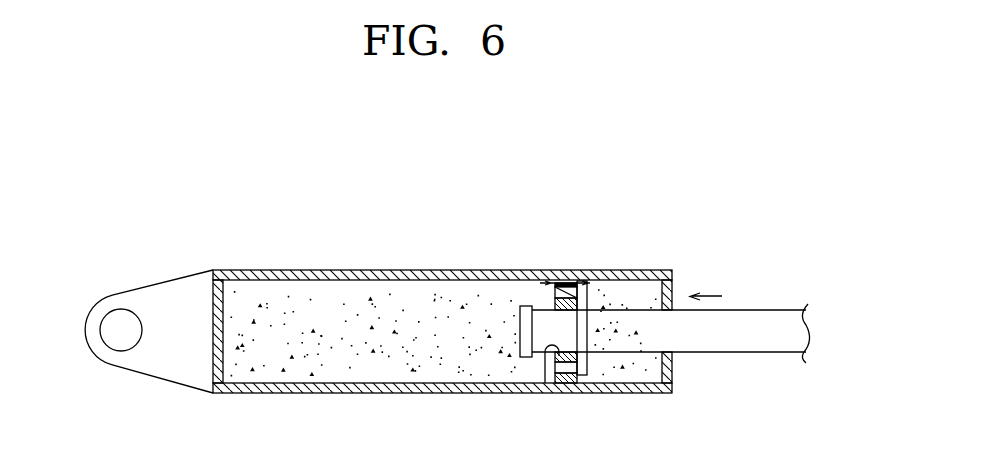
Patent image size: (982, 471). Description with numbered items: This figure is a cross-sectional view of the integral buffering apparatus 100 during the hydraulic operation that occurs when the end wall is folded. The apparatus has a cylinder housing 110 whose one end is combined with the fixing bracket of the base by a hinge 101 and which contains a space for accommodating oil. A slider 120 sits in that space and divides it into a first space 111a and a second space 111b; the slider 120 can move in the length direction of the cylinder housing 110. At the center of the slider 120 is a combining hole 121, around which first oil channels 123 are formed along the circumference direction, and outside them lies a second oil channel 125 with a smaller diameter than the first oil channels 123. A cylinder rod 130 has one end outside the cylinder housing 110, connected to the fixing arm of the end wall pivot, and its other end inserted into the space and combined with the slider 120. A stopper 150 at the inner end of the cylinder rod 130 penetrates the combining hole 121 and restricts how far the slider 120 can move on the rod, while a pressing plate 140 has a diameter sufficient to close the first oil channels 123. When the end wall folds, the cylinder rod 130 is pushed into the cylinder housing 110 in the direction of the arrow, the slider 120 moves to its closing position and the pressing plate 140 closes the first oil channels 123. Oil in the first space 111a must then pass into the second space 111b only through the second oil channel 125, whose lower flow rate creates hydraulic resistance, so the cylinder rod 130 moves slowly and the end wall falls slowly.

The integral buffering apparatus 100 is at (252, 172).
The hinge 101 is at (122, 318).
The cylinder housing 110 is at (385, 275).
The first space 111a is at (273, 277).
The second space 111b is at (625, 293).
The slider 120 is at (562, 380).
The combining hole 121 is at (542, 367).
The first oil channels 123 is at (555, 292).
The second oil channel 125 is at (567, 285).
The cylinder rod 130 is at (757, 318).
The pressing plate 140 is at (585, 365).
The stopper 150 is at (525, 352).